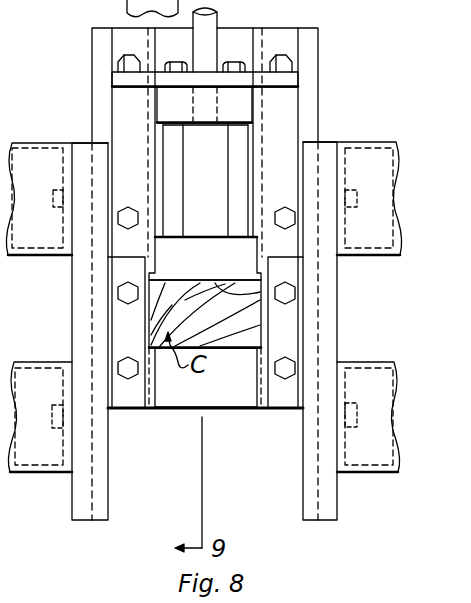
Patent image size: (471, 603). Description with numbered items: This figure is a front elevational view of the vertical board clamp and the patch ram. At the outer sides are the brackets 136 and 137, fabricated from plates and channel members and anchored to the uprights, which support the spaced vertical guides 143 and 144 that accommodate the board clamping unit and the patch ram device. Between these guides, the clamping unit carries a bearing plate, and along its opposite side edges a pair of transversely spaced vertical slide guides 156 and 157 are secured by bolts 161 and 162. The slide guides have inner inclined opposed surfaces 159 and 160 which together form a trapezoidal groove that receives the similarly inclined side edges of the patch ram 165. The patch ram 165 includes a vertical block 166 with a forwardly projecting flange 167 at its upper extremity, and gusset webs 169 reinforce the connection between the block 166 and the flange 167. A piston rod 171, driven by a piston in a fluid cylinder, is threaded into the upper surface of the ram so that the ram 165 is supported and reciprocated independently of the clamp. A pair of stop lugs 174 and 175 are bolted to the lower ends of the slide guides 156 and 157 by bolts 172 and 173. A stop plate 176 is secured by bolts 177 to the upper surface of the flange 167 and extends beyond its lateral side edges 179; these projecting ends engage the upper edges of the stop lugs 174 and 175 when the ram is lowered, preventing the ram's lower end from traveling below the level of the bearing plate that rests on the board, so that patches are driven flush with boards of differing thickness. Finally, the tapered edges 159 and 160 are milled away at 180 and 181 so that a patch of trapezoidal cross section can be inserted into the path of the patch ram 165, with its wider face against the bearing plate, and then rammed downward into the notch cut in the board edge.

The bracket 136 is at (77, 284).
The bracket 137 is at (337, 277).
The vertical guide 143 is at (83, 500).
The vertical guide 144 is at (330, 502).
The vertical slide guide 156 is at (118, 40).
The vertical slide guide 157 is at (288, 40).
The inner inclined opposed surface 159 is at (148, 163).
The inner inclined opposed surface 160 is at (262, 165).
The bolt 161 is at (118, 67).
The bolt 162 is at (290, 62).
The patch ram 165 is at (238, 155).
The vertical block 166 is at (225, 195).
The forwardly projecting flange 167 is at (172, 98).
The gusset web 169 is at (238, 218).
The piston rod 171 is at (197, 42).
The bolt 172 is at (128, 368).
The bolt 173 is at (285, 368).
The stop lug 174 is at (125, 270).
The stop lug 175 is at (288, 270).
The stop plate 176 is at (290, 78).
The bolt 177 is at (183, 65).
The lateral side edge 179 is at (252, 103).
The milled-away portion 180 is at (166, 285).
The milled-away portion 181 is at (243, 296).